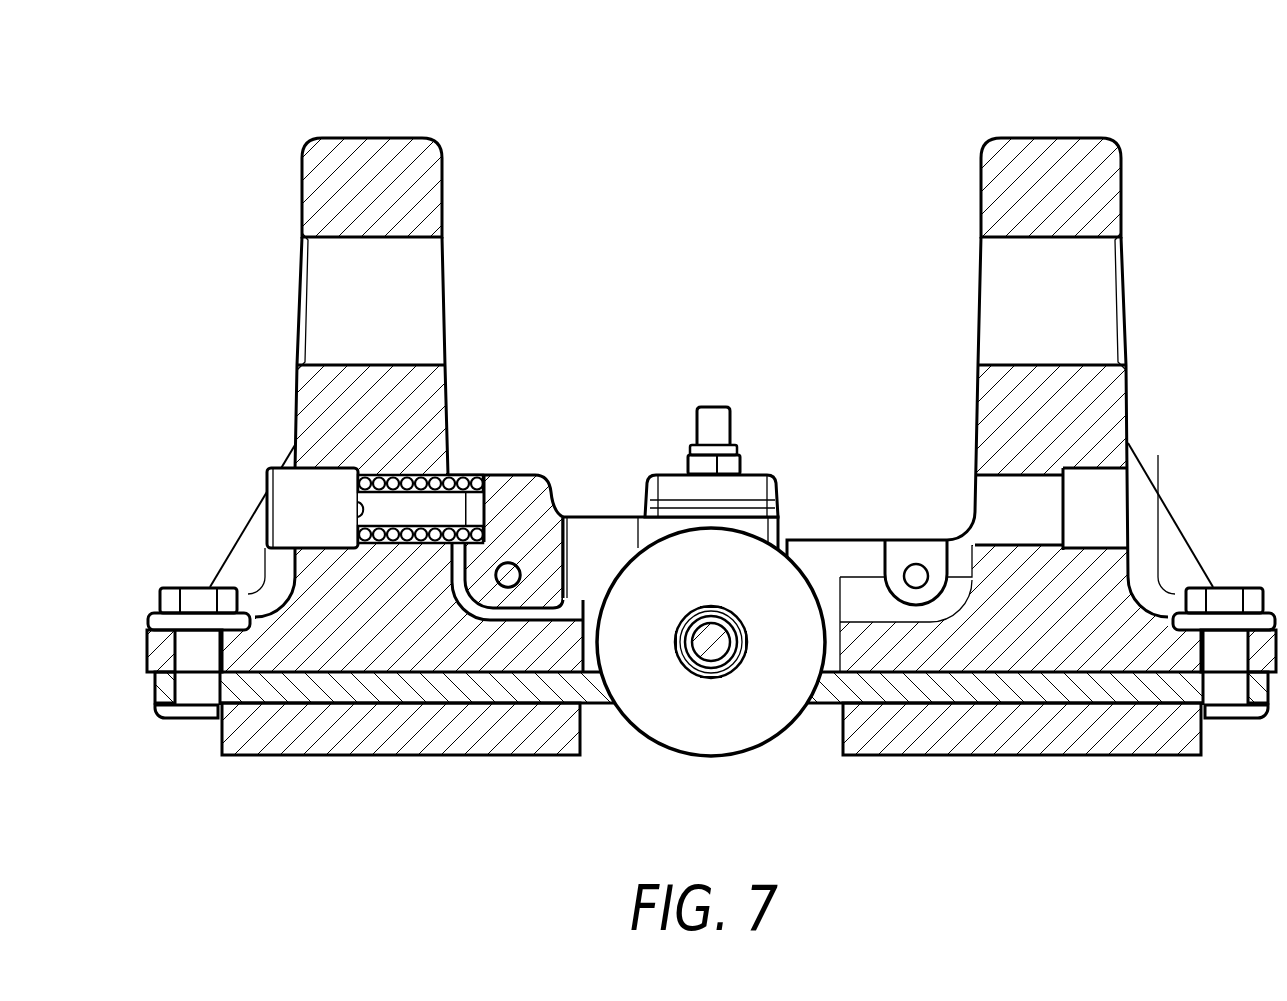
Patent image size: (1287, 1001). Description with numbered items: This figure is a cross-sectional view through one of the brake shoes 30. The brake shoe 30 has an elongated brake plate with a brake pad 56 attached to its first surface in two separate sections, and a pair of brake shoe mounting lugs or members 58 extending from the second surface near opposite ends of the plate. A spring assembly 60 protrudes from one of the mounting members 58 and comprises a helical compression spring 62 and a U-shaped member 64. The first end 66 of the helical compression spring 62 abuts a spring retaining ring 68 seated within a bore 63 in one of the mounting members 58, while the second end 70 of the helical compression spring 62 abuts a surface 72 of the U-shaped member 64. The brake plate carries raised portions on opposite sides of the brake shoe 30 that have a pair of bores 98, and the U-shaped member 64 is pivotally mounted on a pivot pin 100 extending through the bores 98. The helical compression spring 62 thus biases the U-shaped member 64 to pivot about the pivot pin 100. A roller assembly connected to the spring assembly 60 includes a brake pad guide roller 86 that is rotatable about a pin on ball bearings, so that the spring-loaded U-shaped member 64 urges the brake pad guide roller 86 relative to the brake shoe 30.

The brake shoe 30 is at (221, 87).
The brake pad 56 is at (327, 727).
The brake shoe mounting lug 58 is at (371, 138).
The spring assembly 60 is at (592, 302).
The helical compression spring 62 is at (397, 537).
The bore 63 is at (466, 487).
The U-shaped member 64 is at (602, 510).
The first end of the helical compression spring 66 is at (347, 481).
The spring retaining ring 68 is at (353, 500).
The second end of the helical compression spring 70 is at (480, 475).
The surface of the U-shaped member 72 is at (560, 502).
The brake pad guide roller 86 is at (707, 727).
The bore 98 is at (495, 577).
The pivot pin 100 is at (512, 582).